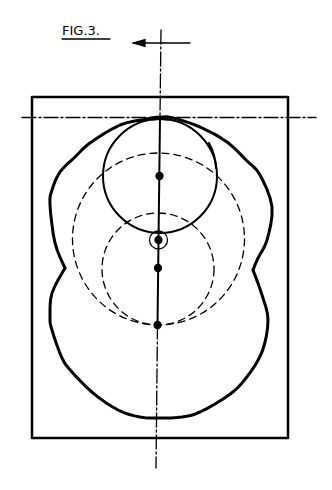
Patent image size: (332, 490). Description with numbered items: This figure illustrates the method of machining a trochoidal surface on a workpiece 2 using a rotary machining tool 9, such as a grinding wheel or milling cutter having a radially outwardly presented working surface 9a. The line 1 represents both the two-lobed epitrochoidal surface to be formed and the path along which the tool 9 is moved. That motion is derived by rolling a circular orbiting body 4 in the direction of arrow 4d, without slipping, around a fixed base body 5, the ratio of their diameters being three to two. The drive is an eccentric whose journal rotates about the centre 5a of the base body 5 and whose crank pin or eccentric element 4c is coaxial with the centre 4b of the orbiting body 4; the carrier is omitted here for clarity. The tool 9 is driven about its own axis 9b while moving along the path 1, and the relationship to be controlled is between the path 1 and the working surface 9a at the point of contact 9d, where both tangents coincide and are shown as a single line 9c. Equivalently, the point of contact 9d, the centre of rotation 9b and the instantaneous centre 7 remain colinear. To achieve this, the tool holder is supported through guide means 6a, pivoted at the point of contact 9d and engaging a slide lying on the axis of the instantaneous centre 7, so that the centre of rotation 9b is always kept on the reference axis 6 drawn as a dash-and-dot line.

The path 1 is at (267, 240).
The workpiece 2 is at (293, 313).
The orbiting body 4 is at (237, 200).
The centre of orbiting body 4b is at (155, 243).
The eccentric element 4c is at (166, 245).
The arrow 4d is at (172, 43).
The base body 5 is at (213, 247).
The centre of base body 5a is at (155, 269).
The reference axis 6 is at (157, 380).
The guide means 6a is at (159, 289).
The instantaneous centre 7 is at (155, 326).
The rotary machining tool 9 is at (195, 150).
The working surface 9a is at (203, 155).
The centre of rotation 9b is at (158, 177).
The tangent line 9c is at (79, 117).
The point of contact 9d is at (162, 117).